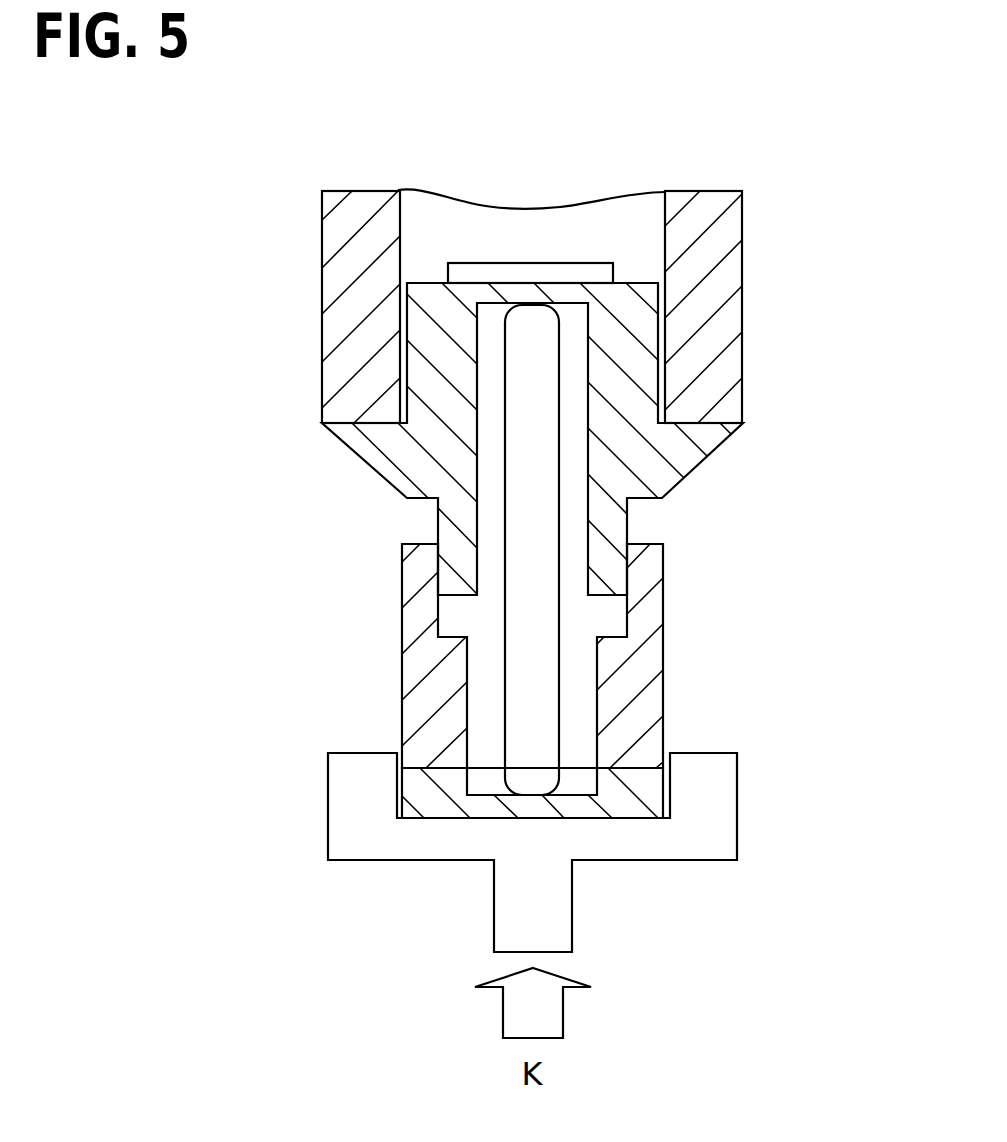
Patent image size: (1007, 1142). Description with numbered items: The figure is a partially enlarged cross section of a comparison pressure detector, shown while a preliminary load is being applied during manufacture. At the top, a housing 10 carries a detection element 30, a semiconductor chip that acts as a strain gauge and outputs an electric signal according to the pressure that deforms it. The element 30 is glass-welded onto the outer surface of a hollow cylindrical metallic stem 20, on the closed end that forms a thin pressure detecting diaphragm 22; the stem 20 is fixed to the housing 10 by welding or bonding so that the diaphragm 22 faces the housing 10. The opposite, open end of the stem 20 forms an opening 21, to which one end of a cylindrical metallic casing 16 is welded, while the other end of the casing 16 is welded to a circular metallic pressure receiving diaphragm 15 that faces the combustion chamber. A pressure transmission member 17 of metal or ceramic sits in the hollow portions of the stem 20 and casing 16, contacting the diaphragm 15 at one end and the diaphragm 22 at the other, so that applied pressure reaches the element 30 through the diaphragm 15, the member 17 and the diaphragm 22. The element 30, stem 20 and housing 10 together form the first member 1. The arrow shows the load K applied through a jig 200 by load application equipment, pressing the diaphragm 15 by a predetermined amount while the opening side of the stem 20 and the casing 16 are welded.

The first member 1 is at (623, 474).
The housing 10 is at (717, 235).
The pressure receiving diaphragm 15 is at (648, 790).
The metallic casing 16 is at (653, 708).
The pressure transmission member 17 is at (532, 502).
The metallic stem 20 is at (630, 392).
The opening 21 is at (590, 557).
The pressure detecting diaphragm 22 is at (523, 292).
The detection element 30 is at (593, 273).
The jig 200 is at (698, 847).